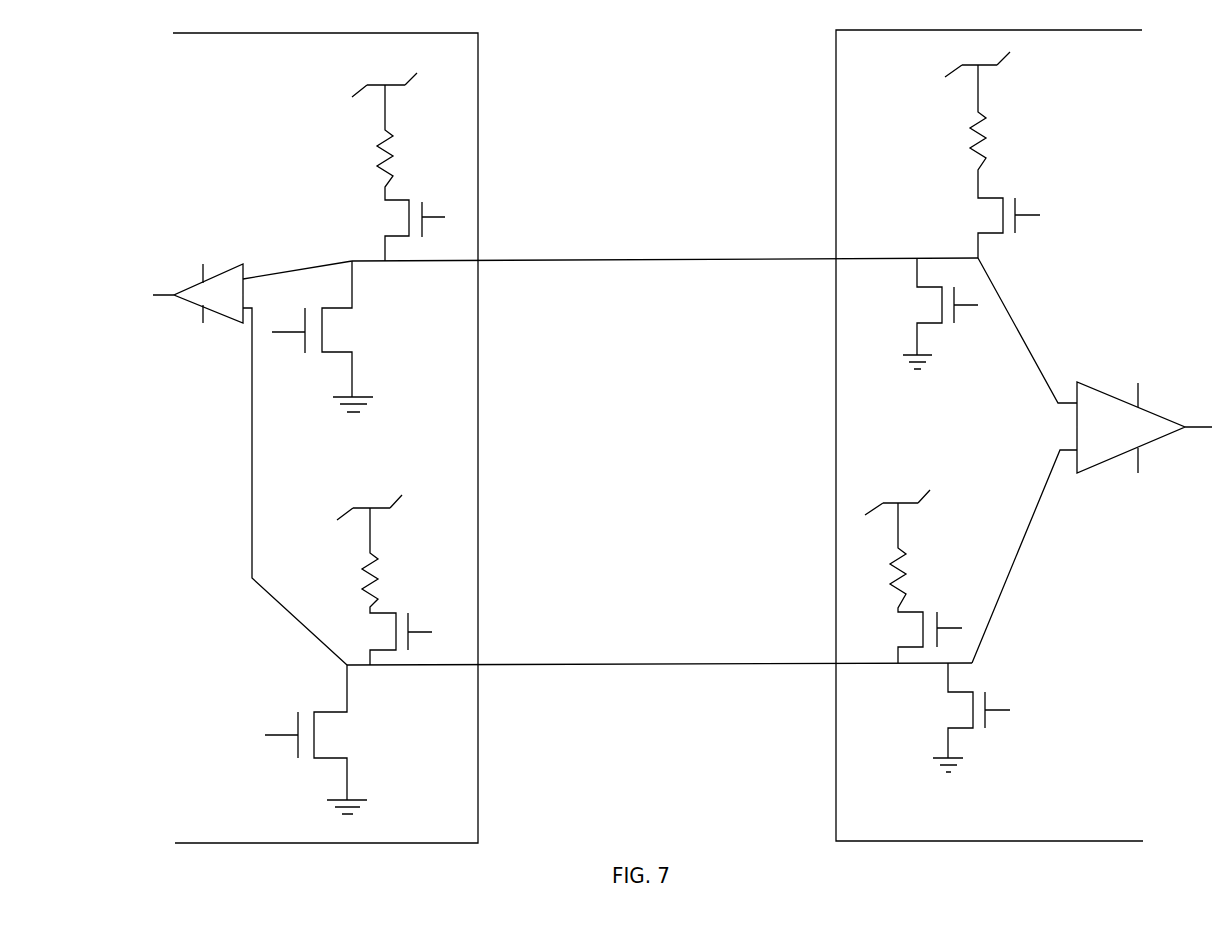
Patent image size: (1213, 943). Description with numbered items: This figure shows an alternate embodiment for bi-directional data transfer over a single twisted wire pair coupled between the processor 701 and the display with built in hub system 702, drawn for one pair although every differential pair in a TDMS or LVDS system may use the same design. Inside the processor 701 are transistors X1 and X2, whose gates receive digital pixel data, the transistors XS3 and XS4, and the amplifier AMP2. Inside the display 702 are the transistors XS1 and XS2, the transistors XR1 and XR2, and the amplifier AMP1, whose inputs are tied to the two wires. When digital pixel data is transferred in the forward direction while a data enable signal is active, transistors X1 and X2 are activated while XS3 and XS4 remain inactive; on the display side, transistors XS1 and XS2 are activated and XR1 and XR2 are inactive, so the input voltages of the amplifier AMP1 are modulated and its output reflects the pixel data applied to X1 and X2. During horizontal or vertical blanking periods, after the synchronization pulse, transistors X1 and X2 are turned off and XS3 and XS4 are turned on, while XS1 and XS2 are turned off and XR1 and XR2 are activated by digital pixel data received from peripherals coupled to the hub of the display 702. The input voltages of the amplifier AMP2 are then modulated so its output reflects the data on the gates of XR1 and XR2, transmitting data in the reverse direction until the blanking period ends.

The processor 701 is at (325, 459).
The display with built in hub system 702 is at (989, 456).
The transistor XS3 is at (391, 162).
The transistor X1 is at (323, 336).
The amplifier AMP2 is at (252, 463).
The transistor XS4 is at (383, 575).
The transistor X2 is at (317, 739).
The transistor XS1 is at (988, 149).
The transistor XR1 is at (926, 313).
The amplifier AMP1 is at (1092, 460).
The transistor XS2 is at (910, 571).
The transistor XR2 is at (957, 717).